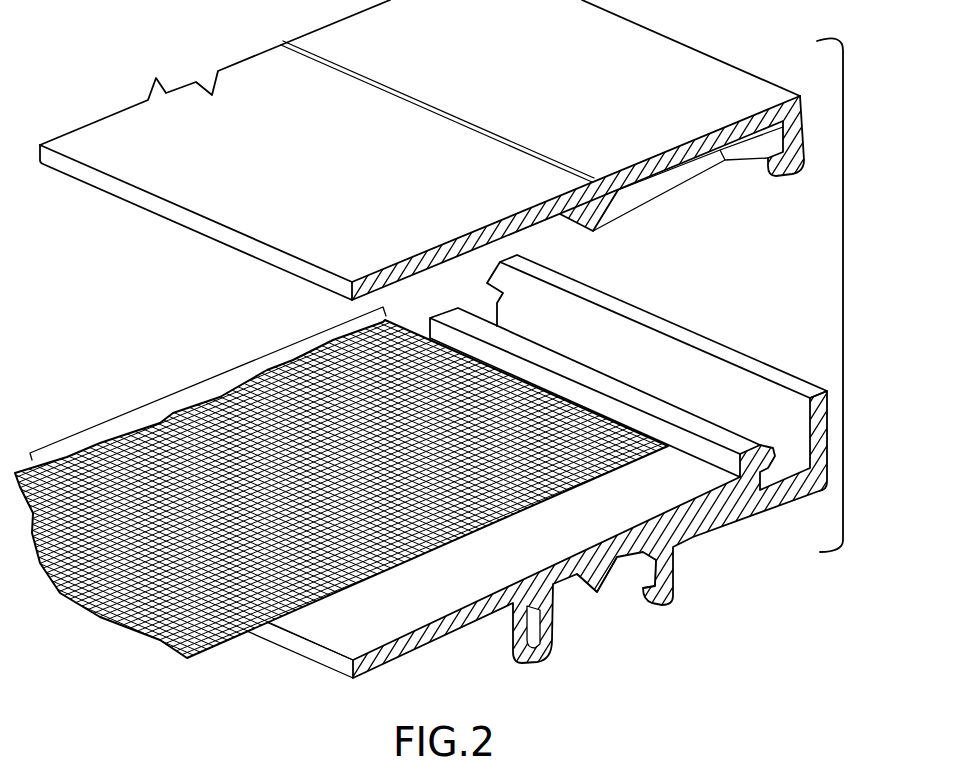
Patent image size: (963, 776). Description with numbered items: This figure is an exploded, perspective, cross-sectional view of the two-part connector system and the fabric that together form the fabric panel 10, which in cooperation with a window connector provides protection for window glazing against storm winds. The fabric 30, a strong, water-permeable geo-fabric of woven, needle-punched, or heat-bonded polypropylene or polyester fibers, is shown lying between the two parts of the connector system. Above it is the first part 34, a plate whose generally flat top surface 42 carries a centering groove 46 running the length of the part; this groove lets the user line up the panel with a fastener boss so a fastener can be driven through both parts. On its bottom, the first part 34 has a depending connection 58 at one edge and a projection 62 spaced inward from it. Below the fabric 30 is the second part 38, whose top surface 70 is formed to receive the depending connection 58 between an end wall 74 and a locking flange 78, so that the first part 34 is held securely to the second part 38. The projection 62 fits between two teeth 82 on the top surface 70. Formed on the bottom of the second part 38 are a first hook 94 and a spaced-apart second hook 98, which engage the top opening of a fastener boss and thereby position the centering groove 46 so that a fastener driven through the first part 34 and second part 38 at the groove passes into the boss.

The fabric panel 10 is at (850, 295).
The fabric 30 is at (150, 397).
The first part 34 is at (259, 87).
The second part 38 is at (386, 654).
The top surface 42 is at (343, 169).
The centering groove 46 is at (510, 143).
The depending connection 58 is at (795, 171).
The projection 62 is at (597, 226).
The top surface 70 is at (474, 582).
The end wall 74 is at (819, 405).
The locking flange 78 is at (750, 516).
The teeth 82 is at (594, 582).
The first hook 94 is at (530, 648).
The second hook 98 is at (662, 607).